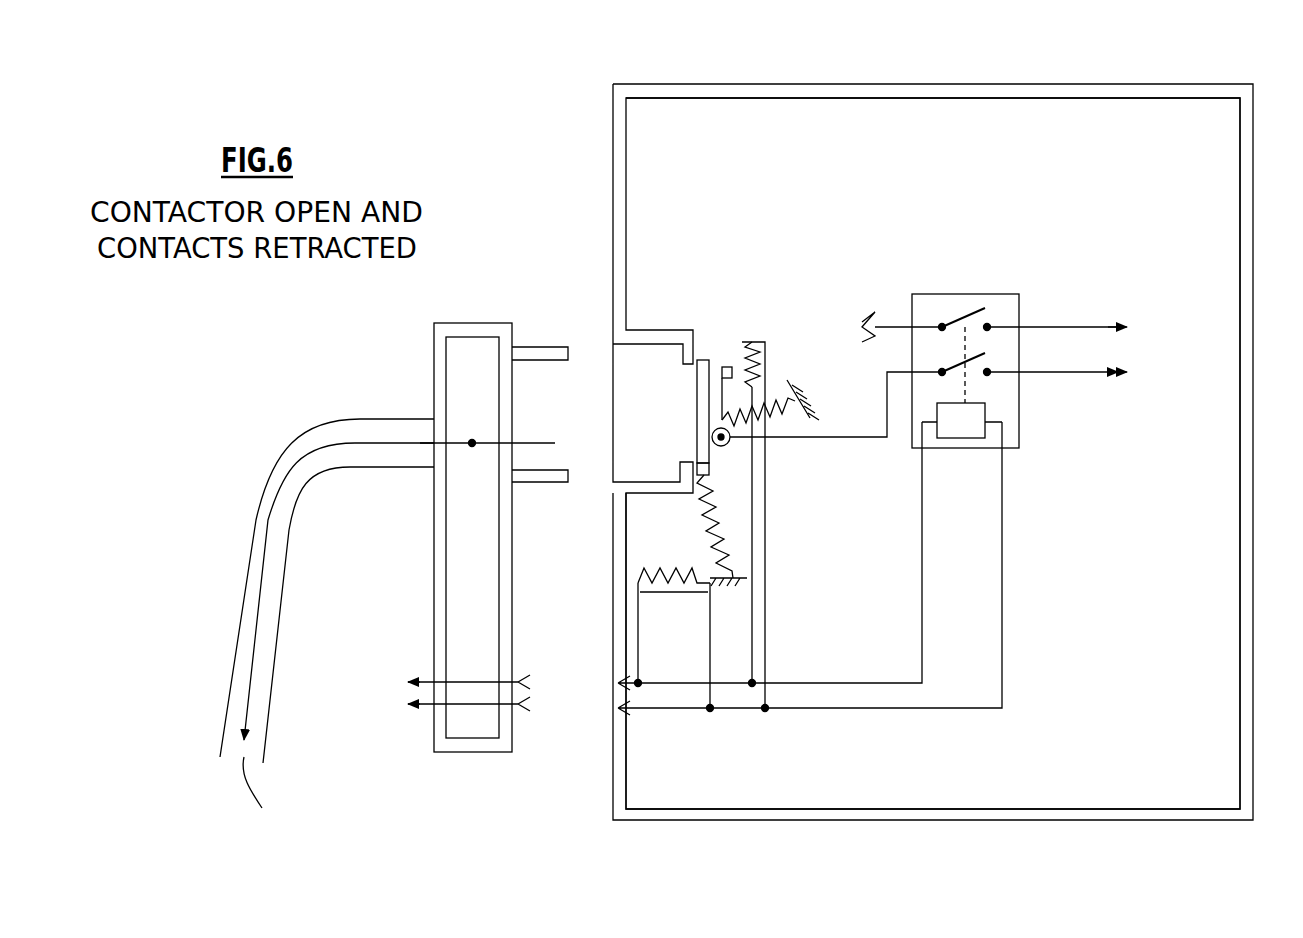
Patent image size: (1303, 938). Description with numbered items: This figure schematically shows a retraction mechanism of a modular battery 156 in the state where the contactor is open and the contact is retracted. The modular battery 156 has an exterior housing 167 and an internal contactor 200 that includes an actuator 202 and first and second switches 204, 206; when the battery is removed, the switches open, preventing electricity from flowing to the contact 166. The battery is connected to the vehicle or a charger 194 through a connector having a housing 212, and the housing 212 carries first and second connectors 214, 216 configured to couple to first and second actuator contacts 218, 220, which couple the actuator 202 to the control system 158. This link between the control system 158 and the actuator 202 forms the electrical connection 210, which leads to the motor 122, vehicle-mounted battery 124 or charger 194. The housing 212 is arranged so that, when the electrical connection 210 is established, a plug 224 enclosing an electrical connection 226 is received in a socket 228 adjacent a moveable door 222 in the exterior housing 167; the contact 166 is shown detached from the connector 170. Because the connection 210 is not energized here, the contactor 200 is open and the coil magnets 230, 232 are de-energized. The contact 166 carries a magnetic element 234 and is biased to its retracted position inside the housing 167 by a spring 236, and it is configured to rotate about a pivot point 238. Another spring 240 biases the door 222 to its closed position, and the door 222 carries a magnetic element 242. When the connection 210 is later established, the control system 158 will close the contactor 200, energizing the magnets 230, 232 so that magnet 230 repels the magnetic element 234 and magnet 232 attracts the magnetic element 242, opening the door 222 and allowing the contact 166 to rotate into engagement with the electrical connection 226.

The modular battery 156 is at (953, 80).
The exterior housing 167 is at (1053, 84).
The housing 212 is at (474, 320).
The plug 224 is at (538, 352).
The electrical connection 226 is at (398, 443).
The connector 170 is at (554, 432).
The first connector 214 is at (526, 685).
The second connector 216 is at (524, 707).
The control system 158 is at (400, 690).
The motor 122 is at (431, 785).
The vehicle-mounted battery 124 is at (420, 790).
The charger 194 is at (430, 838).
The electrical connection 210 is at (600, 670).
The first actuator contact 218 is at (622, 688).
The second actuator contact 220 is at (622, 713).
The moveable door 222 is at (697, 405).
The socket 228 is at (674, 409).
The second contact 166 is at (721, 362).
The magnet 230 is at (769, 340).
The magnetic element 234 is at (731, 340).
The spring 236 is at (786, 412).
The pivot point 238 is at (729, 445).
The magnetic element 242 is at (705, 473).
The spring 240 is at (732, 547).
The magnet 232 is at (686, 596).
The internal contactor 200 is at (931, 290).
The first switch 204 is at (970, 318).
The second switch 206 is at (968, 360).
The actuator 202 is at (957, 432).